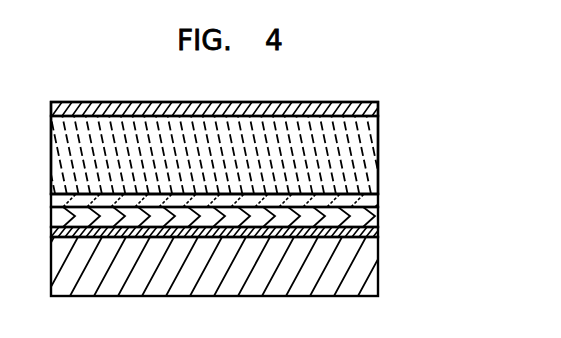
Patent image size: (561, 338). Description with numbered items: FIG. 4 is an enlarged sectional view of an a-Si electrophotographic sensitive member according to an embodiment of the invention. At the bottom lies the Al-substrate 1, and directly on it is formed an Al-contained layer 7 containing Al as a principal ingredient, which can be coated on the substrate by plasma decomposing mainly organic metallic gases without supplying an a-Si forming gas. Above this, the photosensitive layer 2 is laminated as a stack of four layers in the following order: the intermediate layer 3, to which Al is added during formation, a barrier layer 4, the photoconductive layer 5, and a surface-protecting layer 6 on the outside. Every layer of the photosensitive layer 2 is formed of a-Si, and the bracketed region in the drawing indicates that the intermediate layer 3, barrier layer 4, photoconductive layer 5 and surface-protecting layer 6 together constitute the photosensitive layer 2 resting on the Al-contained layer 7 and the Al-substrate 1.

The Al-substrate 1 is at (360, 272).
The photosensitive layer 2 is at (447, 66).
The intermediate layer 3 is at (368, 213).
The barrier layer 4 is at (373, 193).
The photoconductive layer 5 is at (362, 160).
The surface-protecting layer 6 is at (357, 103).
The Al-contained layer 7 is at (378, 230).